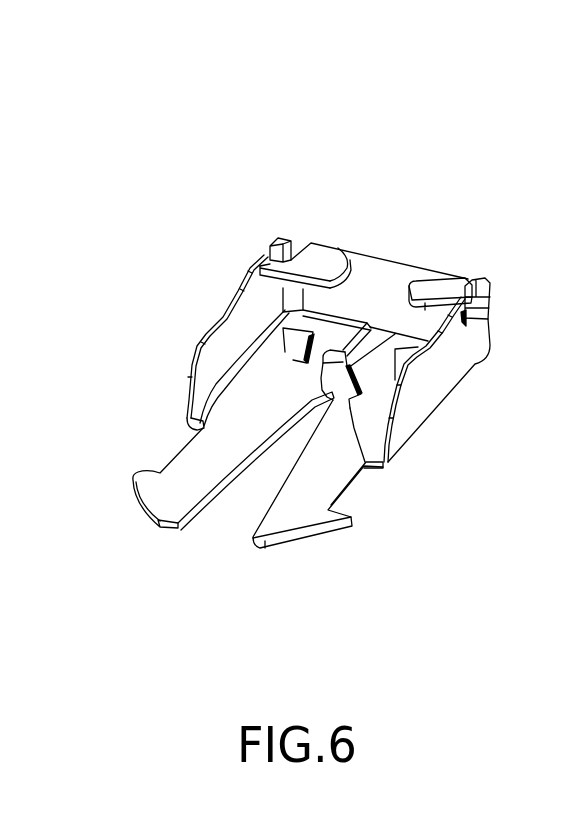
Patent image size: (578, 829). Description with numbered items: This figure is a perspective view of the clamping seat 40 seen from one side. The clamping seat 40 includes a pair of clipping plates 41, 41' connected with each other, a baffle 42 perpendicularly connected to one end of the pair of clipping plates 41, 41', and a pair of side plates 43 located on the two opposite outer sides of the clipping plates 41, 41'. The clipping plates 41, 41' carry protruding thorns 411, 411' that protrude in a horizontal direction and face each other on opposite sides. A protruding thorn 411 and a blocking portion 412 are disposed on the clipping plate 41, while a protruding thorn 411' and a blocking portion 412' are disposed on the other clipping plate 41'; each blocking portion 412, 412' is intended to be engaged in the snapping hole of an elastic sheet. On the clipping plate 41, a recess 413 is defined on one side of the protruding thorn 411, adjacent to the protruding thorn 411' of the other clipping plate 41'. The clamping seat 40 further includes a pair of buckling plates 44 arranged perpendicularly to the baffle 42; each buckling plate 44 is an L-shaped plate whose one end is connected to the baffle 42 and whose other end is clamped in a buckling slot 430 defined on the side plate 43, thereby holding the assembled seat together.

The clamping seat 40 is at (343, 133).
The clipping plate 41 is at (318, 485).
The clipping plate 41' is at (217, 461).
The baffle 42 is at (386, 264).
The side plate 43 is at (457, 362).
The buckling plate 44 is at (434, 291).
The protruding thorn 411 is at (410, 391).
The blocking portion 412 is at (458, 399).
The recess 413 is at (347, 397).
The protruding thorn 411' is at (233, 349).
The blocking portion 412' is at (247, 295).
The buckling slot 430 is at (484, 287).